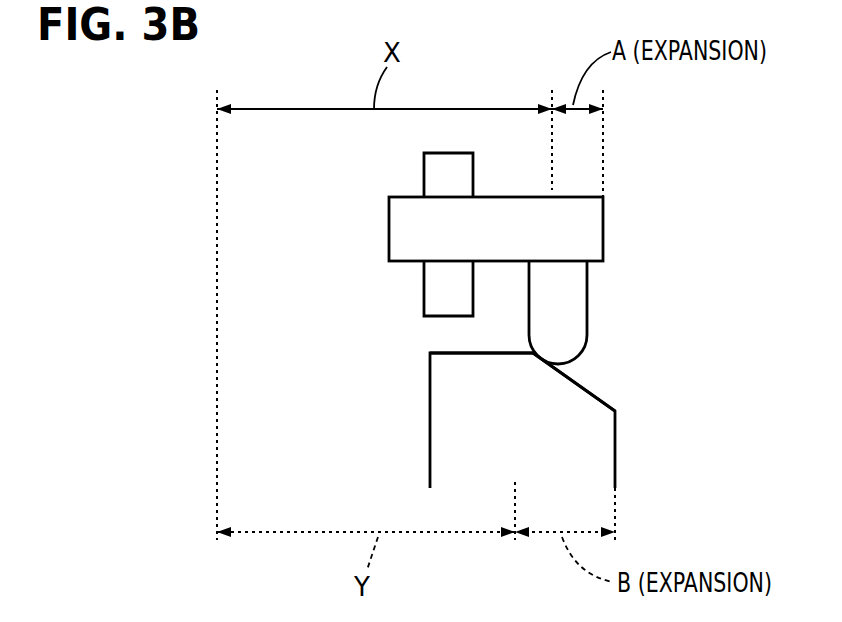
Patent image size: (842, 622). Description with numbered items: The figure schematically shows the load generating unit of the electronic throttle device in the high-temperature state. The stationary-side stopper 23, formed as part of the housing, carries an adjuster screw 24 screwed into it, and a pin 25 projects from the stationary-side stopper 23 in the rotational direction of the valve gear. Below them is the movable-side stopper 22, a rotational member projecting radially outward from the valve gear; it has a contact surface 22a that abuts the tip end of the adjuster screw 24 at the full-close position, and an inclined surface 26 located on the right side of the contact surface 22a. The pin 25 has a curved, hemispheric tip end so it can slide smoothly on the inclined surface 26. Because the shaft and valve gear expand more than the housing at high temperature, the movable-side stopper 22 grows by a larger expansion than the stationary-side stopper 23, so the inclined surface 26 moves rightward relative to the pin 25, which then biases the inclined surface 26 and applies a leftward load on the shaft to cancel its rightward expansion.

The movable-side stopper 22 is at (437, 432).
The contact surface 22a is at (452, 352).
The stationary-side stopper 23 is at (405, 217).
The adjuster screw 24 is at (430, 287).
The pin 25 is at (578, 297).
The inclined surface 26 is at (590, 392).